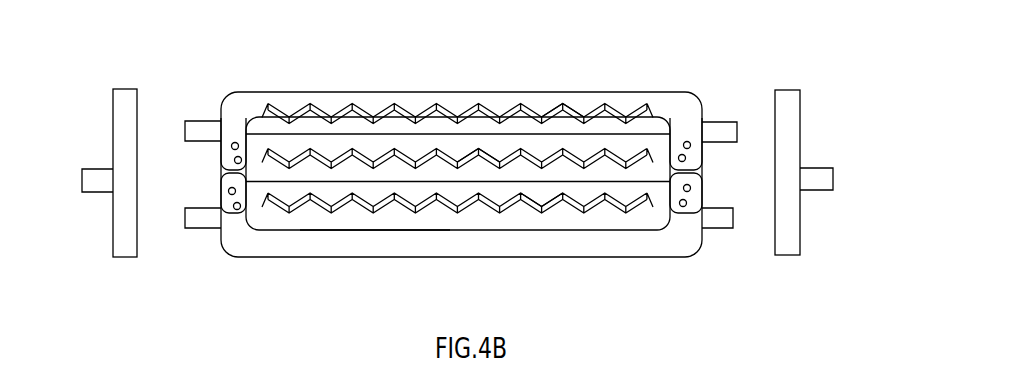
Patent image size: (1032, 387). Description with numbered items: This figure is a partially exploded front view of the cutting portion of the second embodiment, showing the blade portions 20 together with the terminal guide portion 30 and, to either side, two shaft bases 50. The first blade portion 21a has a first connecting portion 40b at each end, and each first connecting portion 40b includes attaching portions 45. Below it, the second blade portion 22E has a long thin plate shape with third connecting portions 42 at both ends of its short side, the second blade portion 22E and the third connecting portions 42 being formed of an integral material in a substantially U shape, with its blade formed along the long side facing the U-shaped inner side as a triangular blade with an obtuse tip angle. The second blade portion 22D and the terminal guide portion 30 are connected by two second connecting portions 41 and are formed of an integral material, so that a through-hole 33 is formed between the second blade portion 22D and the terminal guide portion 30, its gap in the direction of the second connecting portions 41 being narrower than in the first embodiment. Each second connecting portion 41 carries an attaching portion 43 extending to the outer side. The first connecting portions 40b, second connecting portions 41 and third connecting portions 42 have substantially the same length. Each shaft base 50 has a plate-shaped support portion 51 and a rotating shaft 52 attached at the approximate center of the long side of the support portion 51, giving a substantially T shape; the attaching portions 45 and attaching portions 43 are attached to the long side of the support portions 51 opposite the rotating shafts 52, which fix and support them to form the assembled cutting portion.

The blade portions 20 is at (363, 100).
The first blade portion 21a is at (568, 102).
The second blade portion 22E is at (488, 145).
The second blade portion 22D is at (545, 192).
The terminal guide portion 30 is at (483, 242).
The through-hole 33 is at (382, 223).
The first connecting portion 40b is at (227, 128).
The second connecting portions 41 is at (230, 220).
The third connecting portions 42 is at (240, 175).
The attaching portion 43 is at (190, 222).
The attaching portions 45 is at (197, 123).
The shaft bases 50 is at (463, 206).
The support portion 51 is at (123, 128).
The rotating shaft 52 is at (95, 238).